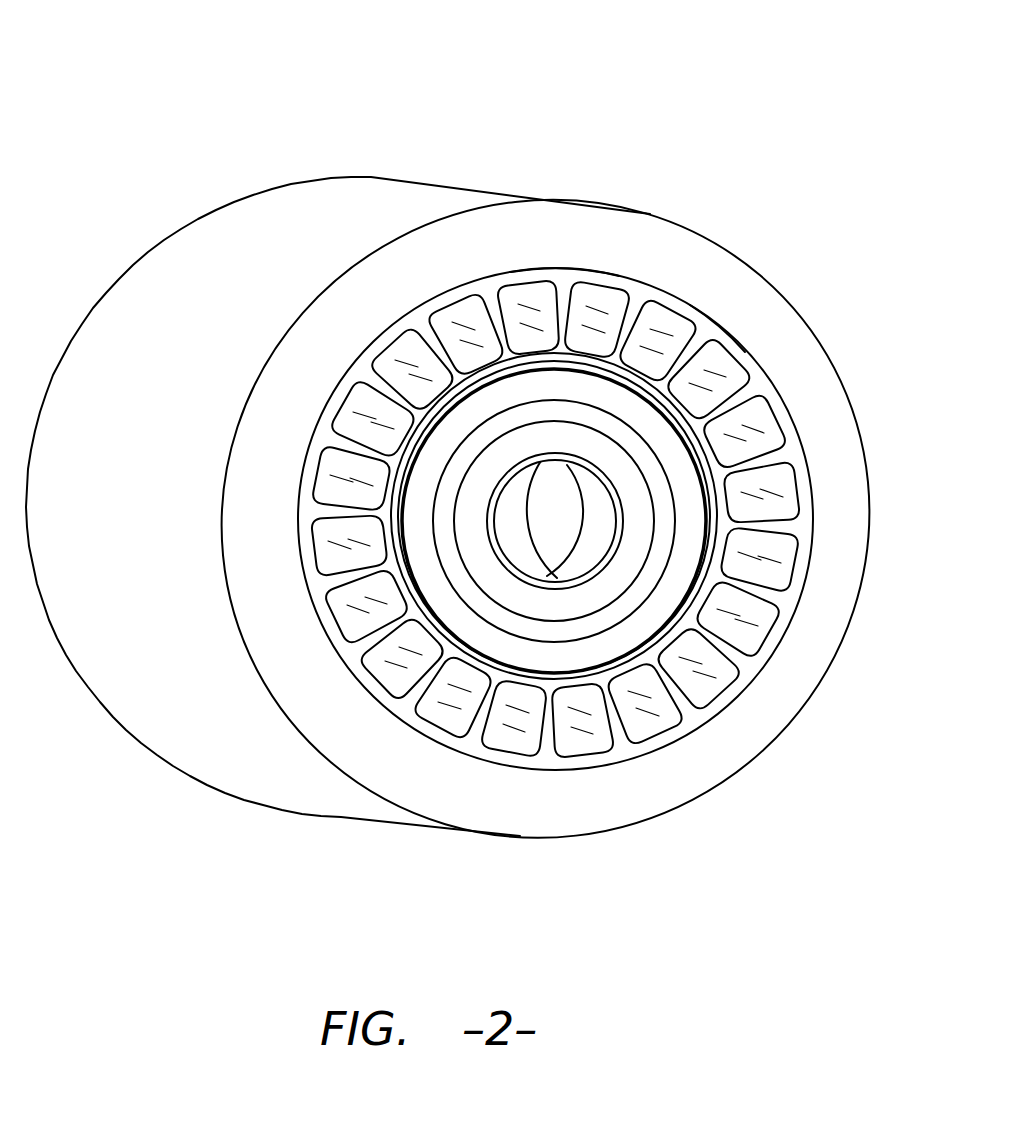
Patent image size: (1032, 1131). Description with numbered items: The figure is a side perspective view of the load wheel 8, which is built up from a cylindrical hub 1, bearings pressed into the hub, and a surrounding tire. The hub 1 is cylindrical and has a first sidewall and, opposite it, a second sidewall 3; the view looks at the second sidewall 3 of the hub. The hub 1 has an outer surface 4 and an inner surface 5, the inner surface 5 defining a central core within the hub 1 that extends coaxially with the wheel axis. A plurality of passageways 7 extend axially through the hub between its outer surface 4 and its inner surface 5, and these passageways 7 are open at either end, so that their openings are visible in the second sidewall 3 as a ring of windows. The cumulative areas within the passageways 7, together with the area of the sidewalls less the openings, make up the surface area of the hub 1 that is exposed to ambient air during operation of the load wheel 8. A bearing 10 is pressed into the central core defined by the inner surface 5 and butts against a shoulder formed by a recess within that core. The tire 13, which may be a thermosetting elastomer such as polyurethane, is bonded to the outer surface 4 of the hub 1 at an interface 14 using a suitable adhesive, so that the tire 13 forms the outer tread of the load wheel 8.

The load wheel 8 is at (250, 108).
The tire 13 is at (163, 300).
The interface 14 is at (752, 680).
The cylindrical hub 1 is at (668, 287).
The outer surface 4 is at (563, 278).
The second sidewall 3 is at (710, 327).
The passageways 7 is at (435, 710).
The inner surface 5 is at (700, 443).
The bearing 10 is at (690, 497).